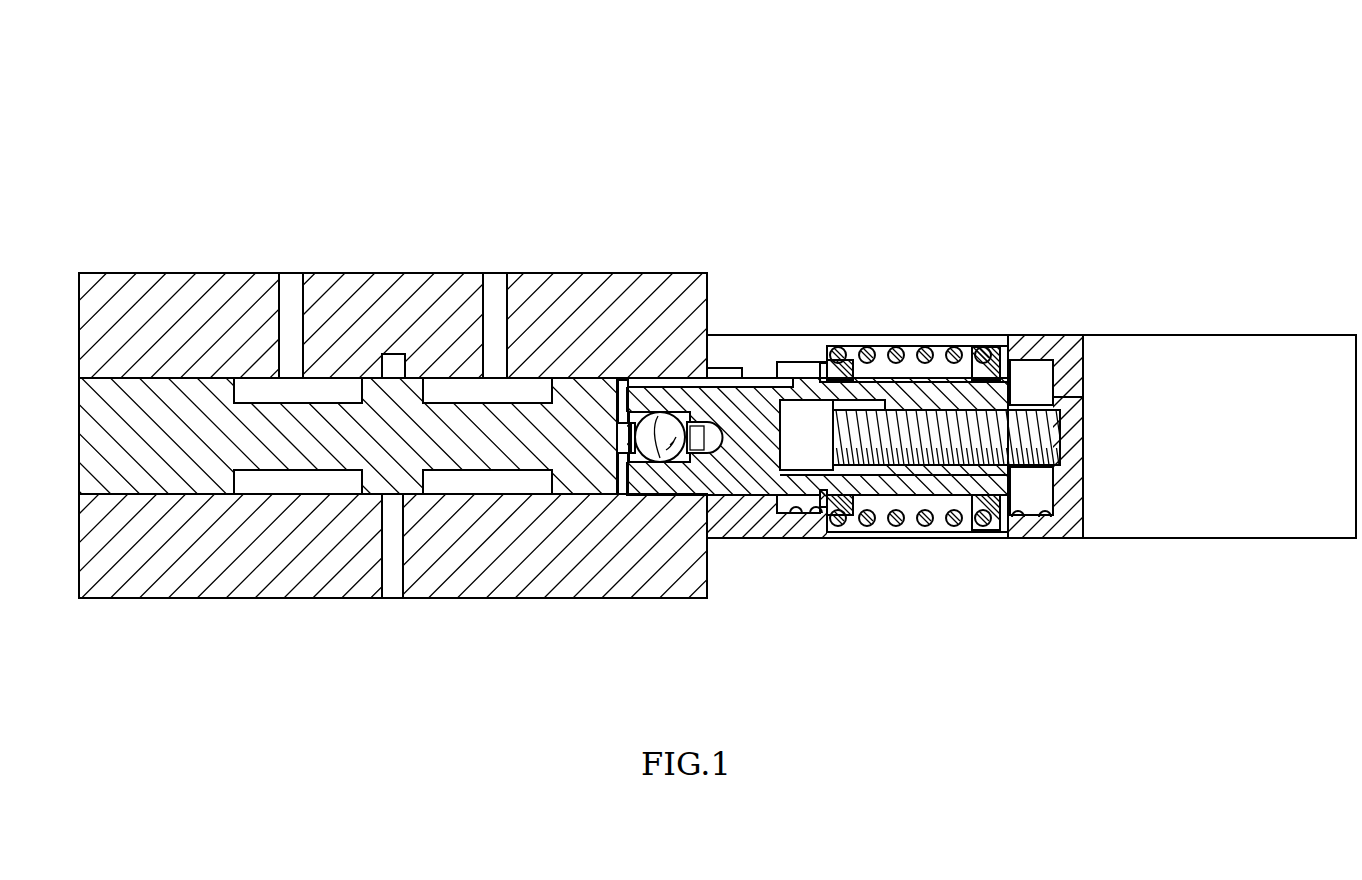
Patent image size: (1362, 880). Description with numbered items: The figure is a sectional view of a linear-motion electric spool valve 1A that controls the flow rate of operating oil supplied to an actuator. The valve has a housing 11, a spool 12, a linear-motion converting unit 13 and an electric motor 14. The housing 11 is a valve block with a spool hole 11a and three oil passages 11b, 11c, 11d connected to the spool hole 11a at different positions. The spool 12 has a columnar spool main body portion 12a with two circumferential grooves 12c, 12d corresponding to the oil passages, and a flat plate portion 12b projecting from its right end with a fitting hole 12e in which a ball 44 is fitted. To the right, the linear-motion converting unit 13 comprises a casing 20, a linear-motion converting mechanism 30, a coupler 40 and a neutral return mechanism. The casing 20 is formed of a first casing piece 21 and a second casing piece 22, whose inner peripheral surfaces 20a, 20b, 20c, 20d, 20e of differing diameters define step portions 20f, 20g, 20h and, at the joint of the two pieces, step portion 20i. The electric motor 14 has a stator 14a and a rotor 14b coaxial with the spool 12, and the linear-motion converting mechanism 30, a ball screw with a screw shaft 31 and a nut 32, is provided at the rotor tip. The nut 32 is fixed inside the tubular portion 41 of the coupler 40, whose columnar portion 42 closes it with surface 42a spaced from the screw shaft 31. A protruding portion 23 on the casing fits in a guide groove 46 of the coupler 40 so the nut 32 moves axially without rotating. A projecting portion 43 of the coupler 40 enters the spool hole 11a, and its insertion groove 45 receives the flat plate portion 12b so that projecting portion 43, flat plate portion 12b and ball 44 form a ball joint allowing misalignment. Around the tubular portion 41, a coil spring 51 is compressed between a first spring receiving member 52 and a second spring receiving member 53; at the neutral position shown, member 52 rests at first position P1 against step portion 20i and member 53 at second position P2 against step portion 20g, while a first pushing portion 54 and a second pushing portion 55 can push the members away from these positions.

The spool valve 1A is at (1199, 121).
The housing 11 is at (190, 298).
The spool hole 11a is at (152, 492).
The oil passage 11b is at (289, 322).
The oil passage 11c is at (392, 548).
The oil passage 11d is at (493, 322).
The spool 12 is at (108, 405).
The spool main body portion 12a is at (578, 392).
The flat plate portion 12b is at (693, 397).
The circumferential groove 12c is at (300, 470).
The circumferential groove 12d is at (497, 470).
The fitting hole 12e is at (652, 395).
The linear-motion converting unit 13 is at (951, 234).
The electric motor 14 is at (1240, 336).
The stator 14a is at (1248, 539).
The rotor 14b is at (1068, 455).
The casing 20 is at (742, 333).
The inner peripheral surface 20a is at (728, 482).
The inner peripheral surface 20b is at (798, 514).
The inner peripheral surface 20c is at (925, 536).
The inner peripheral surface 20d is at (1018, 518).
The inner peripheral surface 20e is at (1068, 510).
The step portion 20f is at (780, 513).
The step portion 20g is at (1000, 532).
The step portion 20h is at (1040, 468).
The step portion 20i is at (836, 532).
The first casing piece 21 is at (717, 327).
The second casing piece 22 is at (915, 340).
The protruding portion 23 is at (722, 372).
The linear-motion converting mechanism 30 is at (1015, 405).
The screw shaft 31 is at (1045, 360).
The nut 32 is at (1008, 340).
The coupler 40 is at (801, 335).
The tubular portion 41 is at (880, 340).
The columnar portion 42 is at (815, 500).
The surface 42a is at (764, 386).
The projecting portion 43 is at (657, 440).
The ball 44 is at (700, 456).
The insertion groove 45 is at (638, 476).
The guide groove 46 is at (752, 384).
The coil spring 51 is at (905, 522).
The first spring receiving member 52 is at (840, 512).
The second spring receiving member 53 is at (985, 512).
The first pushing portion 54 is at (823, 500).
The second pushing portion 55 is at (1025, 516).
The first position P1 is at (831, 344).
The second position P2 is at (1027, 384).